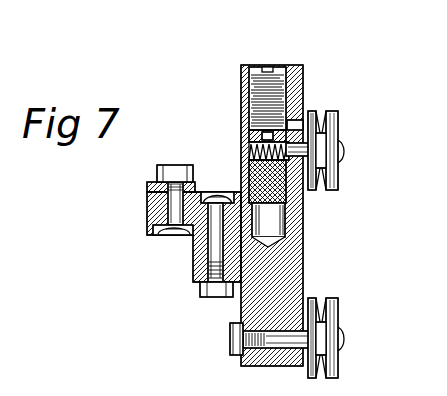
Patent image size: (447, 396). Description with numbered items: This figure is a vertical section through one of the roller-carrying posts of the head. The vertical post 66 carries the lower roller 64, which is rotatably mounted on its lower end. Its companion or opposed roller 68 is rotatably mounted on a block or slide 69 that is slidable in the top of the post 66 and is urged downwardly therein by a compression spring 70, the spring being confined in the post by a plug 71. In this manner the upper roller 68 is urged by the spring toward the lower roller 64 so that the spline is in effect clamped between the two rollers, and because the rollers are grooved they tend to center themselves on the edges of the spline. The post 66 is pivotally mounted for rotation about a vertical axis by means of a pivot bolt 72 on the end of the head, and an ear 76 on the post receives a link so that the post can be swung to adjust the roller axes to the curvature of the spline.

The roller 64 is at (339, 313).
The vertical post 66 is at (304, 90).
The roller 68 is at (339, 178).
The block or slide 69 is at (278, 194).
The compression spring 70 is at (303, 94).
The plug 71 is at (273, 69).
The pivot bolt 72 is at (221, 249).
The ear 76 is at (150, 215).